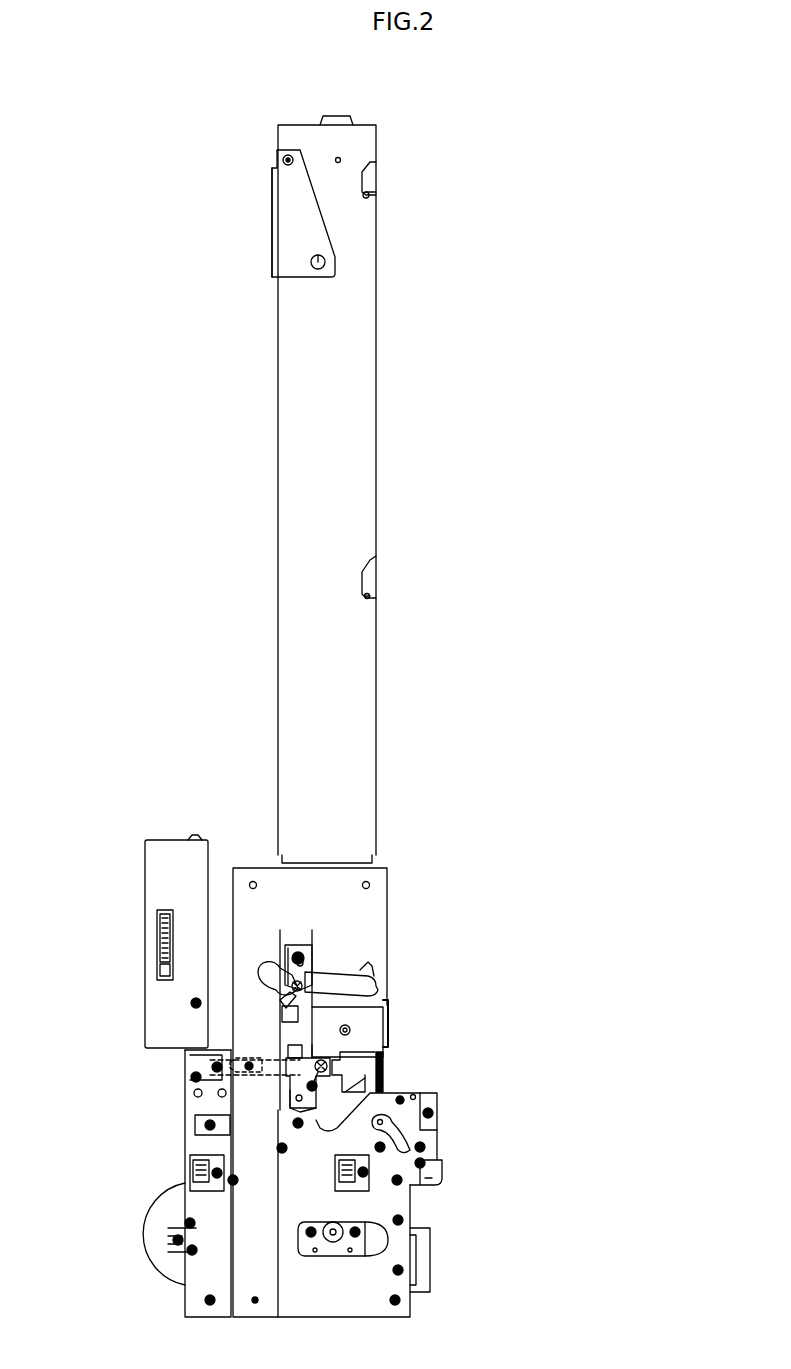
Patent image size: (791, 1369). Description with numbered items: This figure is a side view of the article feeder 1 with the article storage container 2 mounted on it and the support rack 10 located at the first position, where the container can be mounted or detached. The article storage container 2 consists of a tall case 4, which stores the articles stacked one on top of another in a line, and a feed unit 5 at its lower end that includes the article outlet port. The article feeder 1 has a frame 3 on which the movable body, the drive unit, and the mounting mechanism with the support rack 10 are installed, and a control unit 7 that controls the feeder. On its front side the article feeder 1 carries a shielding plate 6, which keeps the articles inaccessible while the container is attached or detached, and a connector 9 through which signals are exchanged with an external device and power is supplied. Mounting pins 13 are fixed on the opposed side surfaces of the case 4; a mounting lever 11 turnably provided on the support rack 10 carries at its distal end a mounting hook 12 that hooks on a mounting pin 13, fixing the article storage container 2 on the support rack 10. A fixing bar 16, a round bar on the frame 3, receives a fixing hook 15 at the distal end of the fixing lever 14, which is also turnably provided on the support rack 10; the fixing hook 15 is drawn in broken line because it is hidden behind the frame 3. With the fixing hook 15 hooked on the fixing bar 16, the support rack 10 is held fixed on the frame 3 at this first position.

The article feeder 1 is at (480, 1186).
The article storage container 2 is at (455, 576).
The frame 3 is at (245, 1215).
The case 4 is at (297, 697).
The feed unit 5 is at (347, 1025).
The shielding plate 6 is at (436, 1097).
The control unit 7 is at (152, 858).
The connector 9 is at (432, 1262).
The support rack 10 is at (333, 1090).
The mounting lever 11 is at (372, 983).
The mounting hook 12 is at (305, 947).
The mounting pin 13 is at (300, 962).
The fixing lever 14 is at (380, 1047).
The fixing hook 15 is at (224, 1071).
The fixing bar 16 is at (253, 1065).